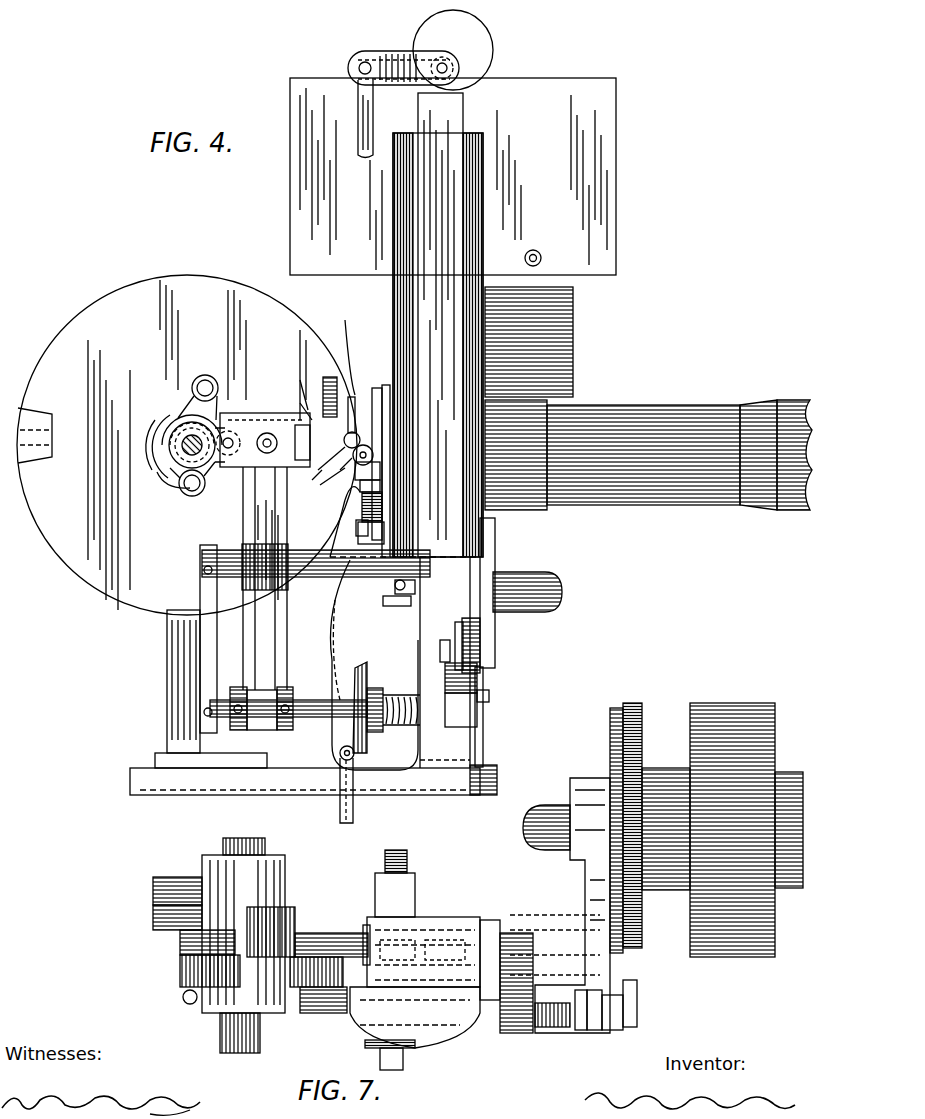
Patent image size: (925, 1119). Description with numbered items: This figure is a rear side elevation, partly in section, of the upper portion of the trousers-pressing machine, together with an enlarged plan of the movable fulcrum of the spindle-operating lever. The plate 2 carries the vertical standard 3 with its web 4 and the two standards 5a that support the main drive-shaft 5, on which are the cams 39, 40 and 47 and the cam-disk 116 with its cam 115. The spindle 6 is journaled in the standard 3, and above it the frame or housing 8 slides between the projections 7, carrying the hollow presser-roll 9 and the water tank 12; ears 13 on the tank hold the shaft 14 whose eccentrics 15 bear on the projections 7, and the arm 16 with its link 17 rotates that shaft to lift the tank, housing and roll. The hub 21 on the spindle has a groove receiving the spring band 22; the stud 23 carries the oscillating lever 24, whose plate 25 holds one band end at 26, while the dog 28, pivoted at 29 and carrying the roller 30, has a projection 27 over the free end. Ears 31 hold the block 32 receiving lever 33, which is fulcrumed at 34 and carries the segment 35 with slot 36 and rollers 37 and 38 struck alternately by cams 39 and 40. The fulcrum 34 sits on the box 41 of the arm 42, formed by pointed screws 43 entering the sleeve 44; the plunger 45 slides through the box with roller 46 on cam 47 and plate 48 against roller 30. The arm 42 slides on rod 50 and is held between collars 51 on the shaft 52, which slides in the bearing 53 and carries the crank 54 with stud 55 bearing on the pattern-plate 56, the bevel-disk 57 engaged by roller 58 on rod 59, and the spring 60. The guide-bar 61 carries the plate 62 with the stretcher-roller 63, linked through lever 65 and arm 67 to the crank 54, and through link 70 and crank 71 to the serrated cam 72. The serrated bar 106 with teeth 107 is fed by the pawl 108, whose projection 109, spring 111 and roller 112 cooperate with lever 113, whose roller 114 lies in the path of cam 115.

In FIG. 4, the plate 2 is at (305, 774).
In FIG. 4, the vertical standard 3 is at (445, 662).
In FIG. 4, the web 4 is at (385, 615).
In FIG. 4, the main drive-shaft 5 is at (172, 440).
In FIG. 7, the main drive-shaft 5 is at (232, 1027).
In FIG. 4, the standards 5a is at (178, 686).
In FIG. 4, the spindle 6 is at (672, 440).
In FIG. 4, the upwardly-projecting portions 7 is at (440, 325).
In FIG. 4, the frame or housing 8 is at (405, 296).
In FIG. 4, the hollow presser-roll 9 is at (548, 333).
In FIG. 4, the water tank or reservoir 12 is at (453, 176).
In FIG. 4, the ears 13 is at (458, 57).
In FIG. 4, the shaft 14 is at (447, 66).
In FIG. 4, the eccentrics 15 is at (453, 50).
In FIG. 4, the arm 16 is at (412, 55).
In FIG. 4, the link or rod 17 is at (360, 105).
In FIG. 4, the hub 21 is at (376, 388).
In FIG. 7, the hub 21 is at (615, 737).
In FIG. 4, the spring wire or band 22 is at (385, 385).
In FIG. 7, the spring wire or band 22 is at (640, 722).
In FIG. 7, the stud or bolt 23 is at (560, 850).
In FIG. 7, the oscillating lever 24 is at (572, 905).
In FIG. 4, the plate 25 is at (340, 479).
In FIG. 7, the plate 25 is at (637, 1005).
In FIG. 4, the securing point 26 is at (380, 470).
In FIG. 4, the projecting portion 27 is at (360, 438).
In FIG. 7, the projecting portion 27 is at (623, 1030).
In FIG. 4, the dog 28 is at (327, 467).
In FIG. 7, the dog 28 is at (581, 1030).
In FIG. 4, the pivot 29 is at (372, 452).
In FIG. 7, the pivot 29 is at (596, 1030).
In FIG. 4, the roller 30 is at (352, 397).
In FIG. 7, the roller 30 is at (548, 1027).
In FIG. 4, the ears or flanges 31 is at (305, 480).
In FIG. 7, the ears or flanges 31 is at (555, 946).
In FIG. 4, the block or stud 32 is at (322, 487).
In FIG. 7, the block or stud 32 is at (550, 913).
In FIG. 4, the lever 33 is at (301, 394).
In FIG. 7, the lever 33 is at (495, 920).
In FIG. 4, the fulcrum 34 is at (272, 435).
In FIG. 7, the fulcrum 34 is at (410, 920).
In FIG. 4, the segment 35 is at (220, 428).
In FIG. 7, the segment 35 is at (207, 942).
In FIG. 4, the segmental slot 36 is at (182, 415).
In FIG. 7, the segmental slot 36 is at (222, 943).
In FIG. 4, the roller 37 is at (215, 382).
In FIG. 7, the roller 37 is at (280, 918).
In FIG. 4, the roller 38 is at (182, 490).
In FIG. 4, the cam 39 is at (160, 447).
In FIG. 7, the cam 39 is at (170, 917).
In FIG. 4, the cam 40 is at (160, 478).
In FIG. 7, the cam 40 is at (178, 885).
In FIG. 4, the box 41 is at (297, 441).
In FIG. 7, the box 41 is at (415, 950).
In FIG. 4, the arm 42 is at (258, 527).
In FIG. 7, the pointed screws 43 is at (407, 862).
In FIG. 7, the sleeve 44 is at (449, 957).
In FIG. 4, the plunger 45 is at (232, 430).
In FIG. 7, the plunger 45 is at (333, 1000).
In FIG. 4, the antifriction-roller 46 is at (226, 455).
In FIG. 7, the antifriction-roller 46 is at (318, 970).
In FIG. 7, the cam 47 is at (210, 969).
In FIG. 4, the vertical plate 48 is at (330, 377).
In FIG. 7, the vertical plate 48 is at (515, 995).
In FIG. 4, the rod 50 is at (316, 571).
In FIG. 4, the collars 51 is at (250, 690).
In FIG. 4, the shaft or spindle 52 is at (288, 699).
In FIG. 4, the support or bearing 53 is at (205, 648).
In FIG. 4, the arm or crank 54 is at (477, 685).
In FIG. 4, the stud 55 is at (460, 667).
In FIG. 4, the pattern-plate 56 is at (443, 668).
In FIG. 4, the bevel-disk 57 is at (358, 640).
In FIG. 4, the antifrictional roller 58 is at (340, 752).
In FIG. 4, the rod 59 is at (342, 806).
In FIG. 4, the spiral spring 60 is at (392, 728).
In FIG. 4, the inclined guide-bar 61 is at (487, 535).
In FIG. 4, the plate 62 is at (480, 629).
In FIG. 4, the stretcher-roller 63 is at (537, 580).
In FIG. 4, the lever 65 is at (483, 795).
In FIG. 4, the arm 67 is at (483, 738).
In FIG. 4, the link 70 is at (489, 696).
In FIG. 4, the arm or crank 71 is at (463, 640).
In FIG. 4, the serrated cam 72 is at (383, 604).
In FIG. 4, the serrated bar 106 is at (392, 594).
In FIG. 4, the teeth or serrations 107 is at (396, 587).
In FIG. 4, the pawl 108 is at (384, 540).
In FIG. 4, the projection 109 is at (380, 490).
In FIG. 4, the spiral spring 111 is at (382, 515).
In FIG. 4, the antifriction-roller 112 is at (343, 528).
In FIG. 4, the lever 113 is at (352, 496).
In FIG. 4, the antifriction-roller 114 is at (341, 350).
In FIG. 4, the cam 115 is at (38, 444).
In FIG. 4, the cam-disk 116 is at (187, 445).